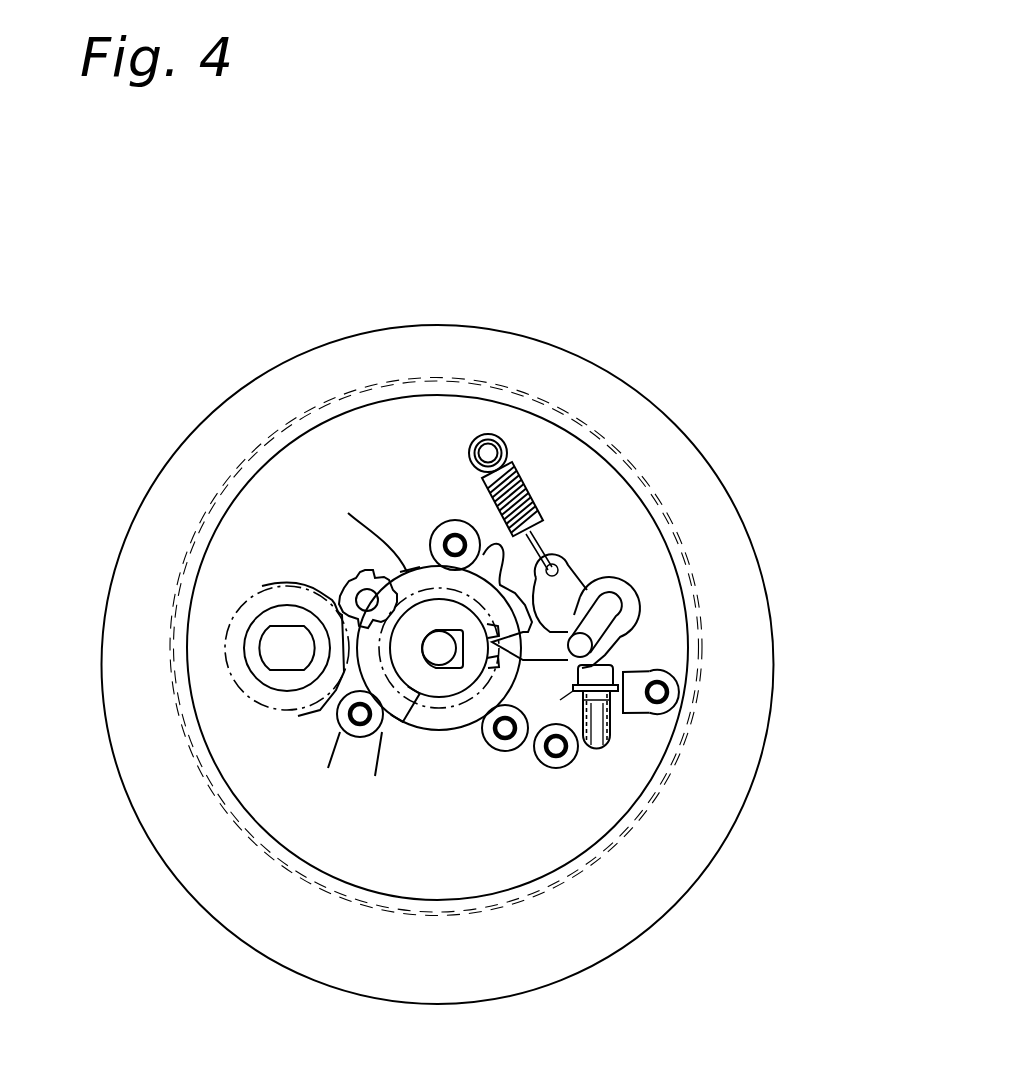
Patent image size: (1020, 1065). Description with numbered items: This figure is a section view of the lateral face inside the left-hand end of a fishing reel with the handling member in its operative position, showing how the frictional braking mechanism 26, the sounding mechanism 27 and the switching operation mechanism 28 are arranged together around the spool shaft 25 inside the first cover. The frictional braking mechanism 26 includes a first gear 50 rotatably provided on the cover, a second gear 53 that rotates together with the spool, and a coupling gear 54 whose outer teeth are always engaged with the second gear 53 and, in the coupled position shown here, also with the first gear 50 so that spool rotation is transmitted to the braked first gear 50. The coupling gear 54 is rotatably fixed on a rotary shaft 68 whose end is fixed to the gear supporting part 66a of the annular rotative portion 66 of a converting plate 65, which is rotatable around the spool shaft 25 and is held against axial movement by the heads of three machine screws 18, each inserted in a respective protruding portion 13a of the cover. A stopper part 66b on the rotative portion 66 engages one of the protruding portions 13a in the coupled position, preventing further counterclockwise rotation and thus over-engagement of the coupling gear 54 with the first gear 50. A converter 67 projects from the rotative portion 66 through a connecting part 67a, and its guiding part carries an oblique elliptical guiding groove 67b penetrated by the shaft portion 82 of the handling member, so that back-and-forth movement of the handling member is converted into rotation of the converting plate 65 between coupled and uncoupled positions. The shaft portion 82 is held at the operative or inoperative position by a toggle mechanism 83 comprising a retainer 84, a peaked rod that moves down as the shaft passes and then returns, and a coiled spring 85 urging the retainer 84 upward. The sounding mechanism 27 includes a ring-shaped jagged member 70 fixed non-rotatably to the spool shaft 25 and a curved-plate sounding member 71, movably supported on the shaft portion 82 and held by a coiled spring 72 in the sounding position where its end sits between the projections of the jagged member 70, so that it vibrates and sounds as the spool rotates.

The protruding portion 13a is at (468, 523).
The machine screw 18 is at (455, 540).
The spool shaft 25 is at (435, 648).
The frictional braking mechanism 26 is at (243, 584).
The sounding mechanism 27 is at (526, 626).
The switching operation mechanism 28 is at (626, 577).
The first gear 50 is at (279, 576).
The second gear 53 is at (386, 722).
The coupling gear 54 is at (368, 572).
The converting plate 65 is at (441, 730).
The rotative portion 66 is at (508, 598).
The gear supporting part 66a is at (405, 566).
The stopper part 66b is at (468, 458).
The converter 67 is at (646, 600).
The connecting part 67a is at (545, 752).
The guiding groove 67b is at (582, 666).
The rotary shaft 68 is at (363, 590).
The jagged member 70 is at (397, 720).
The sounding member 71 is at (604, 541).
The coiled spring 72 is at (538, 522).
The shaft portion 82 is at (592, 643).
The toggle mechanism 83 is at (617, 732).
The retainer 84 is at (607, 668).
The coiled spring 85 is at (592, 750).